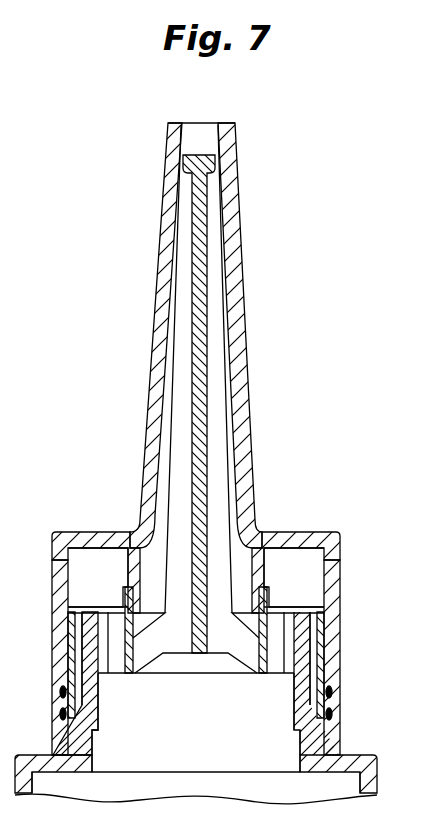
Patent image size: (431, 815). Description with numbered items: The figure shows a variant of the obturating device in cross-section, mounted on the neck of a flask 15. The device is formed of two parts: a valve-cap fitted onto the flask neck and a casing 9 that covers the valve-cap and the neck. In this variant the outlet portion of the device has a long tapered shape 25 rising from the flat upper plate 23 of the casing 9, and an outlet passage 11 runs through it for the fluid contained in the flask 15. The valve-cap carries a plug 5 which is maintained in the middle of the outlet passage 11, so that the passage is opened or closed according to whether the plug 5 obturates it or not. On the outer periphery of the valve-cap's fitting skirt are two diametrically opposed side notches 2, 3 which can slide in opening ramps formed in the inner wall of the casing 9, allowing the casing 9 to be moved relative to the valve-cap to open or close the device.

The outlet passage 11 is at (203, 134).
The plug 5 is at (215, 163).
The long tapered outlet portion 25 is at (238, 342).
The flat upper plate 23 is at (292, 530).
The casing 9 is at (333, 560).
The side notch 2 is at (331, 683).
The flask 15 is at (313, 727).
The side notch 3 is at (62, 680).